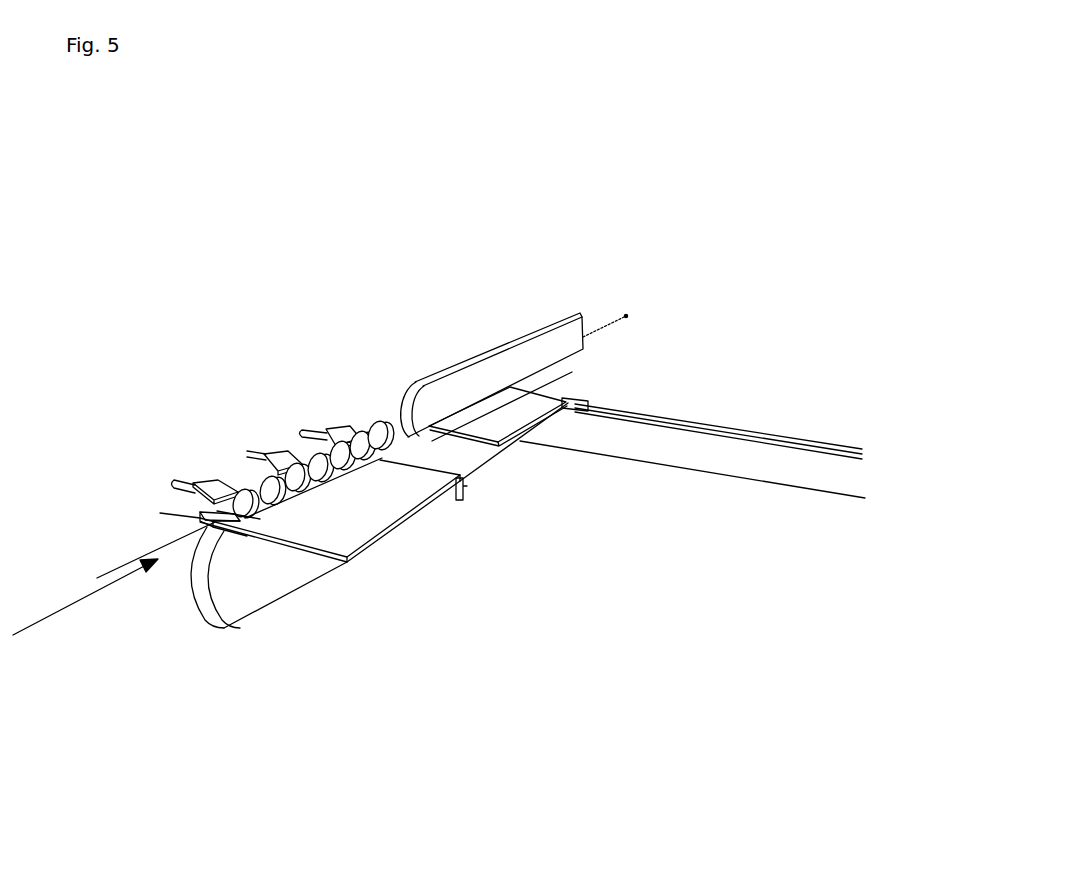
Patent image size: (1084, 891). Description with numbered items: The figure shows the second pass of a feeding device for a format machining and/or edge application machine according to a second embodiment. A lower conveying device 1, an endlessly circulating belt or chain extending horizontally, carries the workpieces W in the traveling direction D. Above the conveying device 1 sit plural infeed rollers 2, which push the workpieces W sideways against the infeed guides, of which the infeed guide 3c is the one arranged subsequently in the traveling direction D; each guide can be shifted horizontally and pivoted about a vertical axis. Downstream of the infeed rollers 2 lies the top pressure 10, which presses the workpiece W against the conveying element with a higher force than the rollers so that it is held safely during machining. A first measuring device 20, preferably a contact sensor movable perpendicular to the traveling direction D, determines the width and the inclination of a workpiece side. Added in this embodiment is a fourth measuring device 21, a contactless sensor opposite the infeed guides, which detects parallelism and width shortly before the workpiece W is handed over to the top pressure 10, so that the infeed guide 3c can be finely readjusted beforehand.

The lower conveying device 1 is at (247, 580).
The infeed rollers 2 is at (347, 455).
The infeed guide 3c is at (200, 517).
The top pressure 10 is at (519, 362).
The first measuring device 20 is at (573, 402).
The fourth measuring device 21 is at (460, 482).
The workpiece W is at (388, 482).
The traveling direction D is at (85, 612).